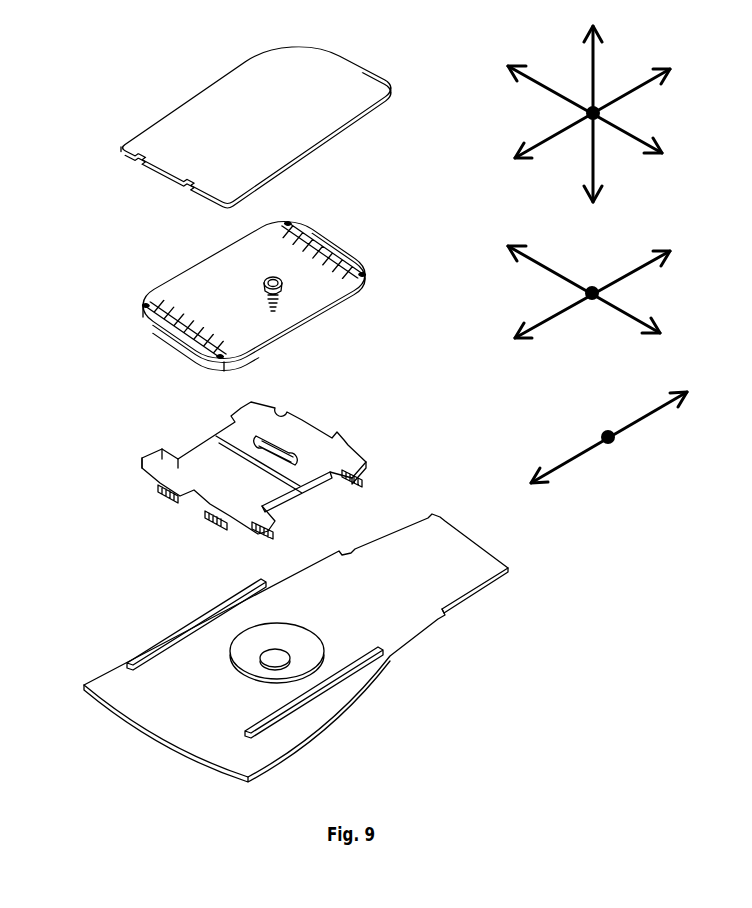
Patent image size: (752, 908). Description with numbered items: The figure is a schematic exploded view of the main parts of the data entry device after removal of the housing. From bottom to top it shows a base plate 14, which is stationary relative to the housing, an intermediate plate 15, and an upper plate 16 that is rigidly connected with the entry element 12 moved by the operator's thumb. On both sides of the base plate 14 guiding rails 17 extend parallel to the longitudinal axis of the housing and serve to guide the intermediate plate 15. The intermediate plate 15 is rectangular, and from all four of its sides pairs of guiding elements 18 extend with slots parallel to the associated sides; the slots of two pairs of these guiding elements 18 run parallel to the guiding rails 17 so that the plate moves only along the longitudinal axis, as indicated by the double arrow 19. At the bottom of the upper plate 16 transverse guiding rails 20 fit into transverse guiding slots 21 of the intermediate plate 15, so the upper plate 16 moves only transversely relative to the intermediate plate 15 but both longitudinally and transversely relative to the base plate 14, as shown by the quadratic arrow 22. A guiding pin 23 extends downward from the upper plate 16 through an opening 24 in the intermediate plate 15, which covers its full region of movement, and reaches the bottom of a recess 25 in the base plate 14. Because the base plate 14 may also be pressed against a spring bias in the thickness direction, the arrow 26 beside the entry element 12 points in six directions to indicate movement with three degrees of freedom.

The entry element 12 is at (170, 103).
The upper plate 16 is at (170, 270).
The transverse guiding rails 20 is at (177, 327).
The guiding pin 23 is at (282, 298).
The intermediate plate 15 is at (187, 447).
The opening 24 is at (292, 455).
The guiding elements 18 is at (347, 478).
The transverse guiding slots 21 is at (160, 497).
The base plate 14 is at (173, 635).
The recess 25 is at (302, 650).
The guiding rails 17 is at (303, 707).
The arrow showing six directions 26 is at (570, 115).
The quadratic arrow 22 is at (588, 313).
The double arrow 19 is at (615, 450).